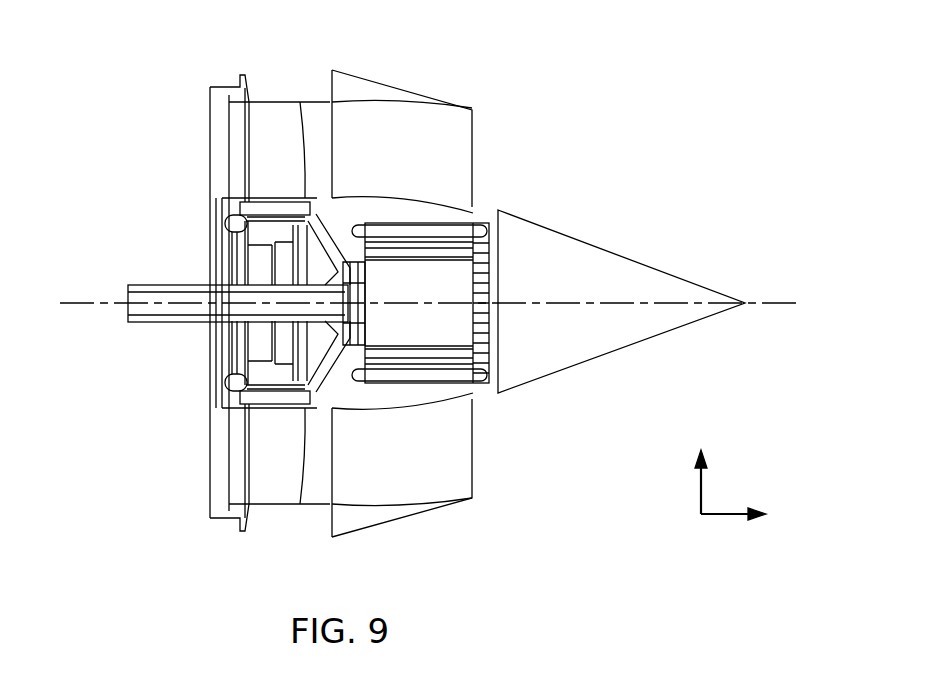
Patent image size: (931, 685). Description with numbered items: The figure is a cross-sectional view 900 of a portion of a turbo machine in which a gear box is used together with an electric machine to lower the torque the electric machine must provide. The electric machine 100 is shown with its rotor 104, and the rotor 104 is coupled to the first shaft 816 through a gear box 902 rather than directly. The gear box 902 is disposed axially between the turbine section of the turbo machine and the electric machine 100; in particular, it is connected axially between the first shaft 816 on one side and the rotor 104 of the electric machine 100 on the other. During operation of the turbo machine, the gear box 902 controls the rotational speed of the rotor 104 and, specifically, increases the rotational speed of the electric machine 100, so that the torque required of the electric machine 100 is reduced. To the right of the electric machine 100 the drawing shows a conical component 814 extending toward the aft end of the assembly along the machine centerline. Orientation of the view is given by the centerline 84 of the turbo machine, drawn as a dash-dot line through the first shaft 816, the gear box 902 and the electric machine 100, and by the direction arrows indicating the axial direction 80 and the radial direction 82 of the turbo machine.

The cross-sectional view 900 is at (676, 48).
The first shaft 816 is at (143, 284).
The gear box 902 is at (358, 297).
The electric machine 100 is at (482, 224).
The rotor 104 is at (458, 338).
The cone 814 is at (605, 253).
The centerline 84 is at (770, 302).
The radial direction 82 is at (698, 490).
The axial direction 80 is at (725, 515).